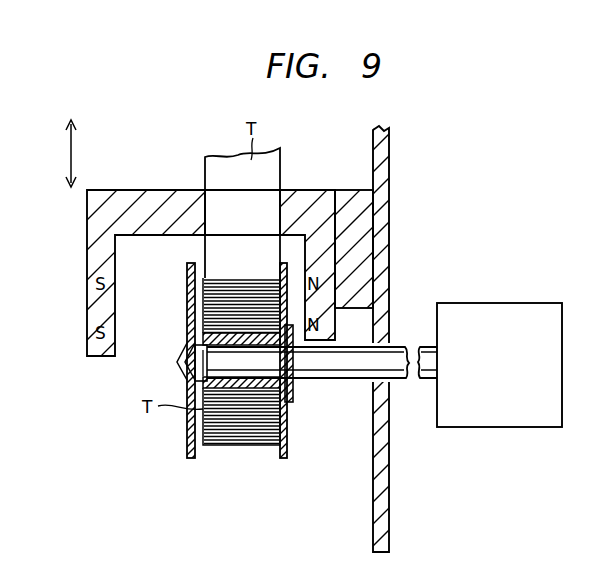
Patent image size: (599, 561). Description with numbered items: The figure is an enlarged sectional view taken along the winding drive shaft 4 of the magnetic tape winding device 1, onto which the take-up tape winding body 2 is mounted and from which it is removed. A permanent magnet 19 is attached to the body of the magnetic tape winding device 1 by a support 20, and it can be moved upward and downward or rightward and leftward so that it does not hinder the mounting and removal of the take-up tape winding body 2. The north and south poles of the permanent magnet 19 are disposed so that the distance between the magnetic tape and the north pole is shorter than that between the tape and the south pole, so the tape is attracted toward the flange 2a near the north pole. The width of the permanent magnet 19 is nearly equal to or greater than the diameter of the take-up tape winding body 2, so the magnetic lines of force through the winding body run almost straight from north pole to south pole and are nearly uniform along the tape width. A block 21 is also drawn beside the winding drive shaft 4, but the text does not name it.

The magnetic tape winding device 1 is at (380, 495).
The take-up tape winding body 2 is at (186, 431).
The flange 2a is at (288, 429).
The winding drive shaft 4 is at (395, 351).
The permanent magnet 19 is at (90, 268).
The support 20 is at (362, 217).
The drive unit 21 is at (493, 306).